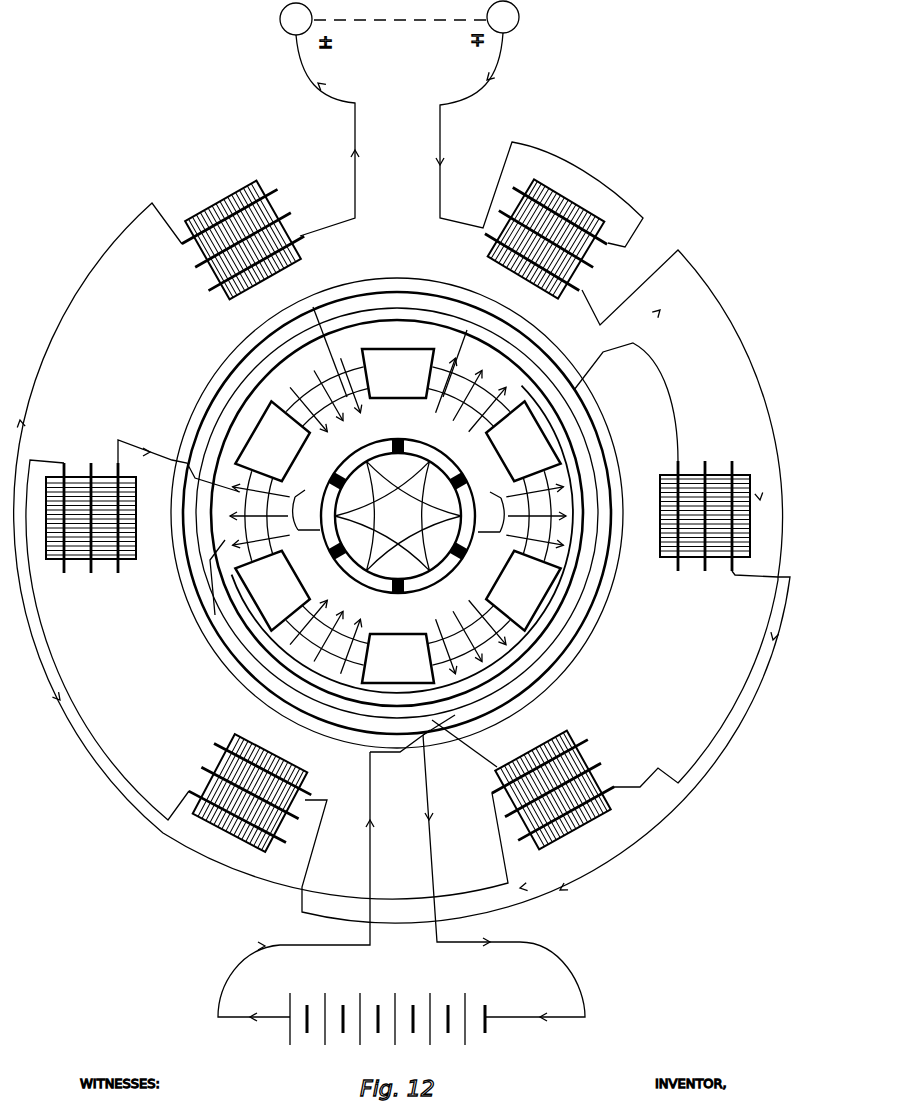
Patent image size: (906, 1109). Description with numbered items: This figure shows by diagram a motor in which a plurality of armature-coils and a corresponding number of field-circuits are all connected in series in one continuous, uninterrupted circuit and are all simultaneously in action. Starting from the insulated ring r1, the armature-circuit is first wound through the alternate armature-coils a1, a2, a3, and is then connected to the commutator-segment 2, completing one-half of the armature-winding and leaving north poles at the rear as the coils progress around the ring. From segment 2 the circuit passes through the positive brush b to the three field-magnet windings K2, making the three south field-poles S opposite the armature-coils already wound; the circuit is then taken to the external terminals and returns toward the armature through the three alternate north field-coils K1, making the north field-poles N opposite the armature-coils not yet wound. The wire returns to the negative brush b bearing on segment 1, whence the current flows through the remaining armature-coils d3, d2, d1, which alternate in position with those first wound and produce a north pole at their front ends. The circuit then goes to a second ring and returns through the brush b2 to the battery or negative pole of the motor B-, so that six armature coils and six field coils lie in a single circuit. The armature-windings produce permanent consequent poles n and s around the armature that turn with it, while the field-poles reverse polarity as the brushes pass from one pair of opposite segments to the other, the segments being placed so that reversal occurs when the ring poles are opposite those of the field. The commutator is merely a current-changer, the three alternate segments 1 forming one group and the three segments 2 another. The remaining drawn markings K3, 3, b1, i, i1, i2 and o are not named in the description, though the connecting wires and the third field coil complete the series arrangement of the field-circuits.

The north field-coil K1 is at (334, 514).
The field-magnet winding K2 is at (461, 390).
The field magnet coil K³ K3 is at (244, 792).
The north consequent pole n is at (397, 490).
The south consequent pole s is at (397, 542).
The north field-pole N is at (329, 517).
The south field-pole S is at (456, 516).
The armature-coil a1 is at (329, 396).
The armature-coil a2 is at (329, 635).
The armature-coil a3 is at (540, 515).
The armature-coil d1 is at (466, 396).
The armature-coil d2 is at (466, 635).
The armature-coil d3 is at (255, 515).
The commutator-segment 1 is at (398, 516).
The commutator-segment 2 is at (359, 516).
The commutator segment connection 3 is at (436, 579).
The brush b is at (399, 520).
The brush conductor b' b1 is at (400, 755).
The brush b2 is at (426, 725).
The connecting wire i is at (402, 563).
The connecting wire i' i1 is at (428, 526).
The connecting wire i² i2 is at (212, 617).
The insulated ring r1 is at (610, 624).
The wire o is at (456, 337).
The negative pole of the motor B- is at (504, 894).